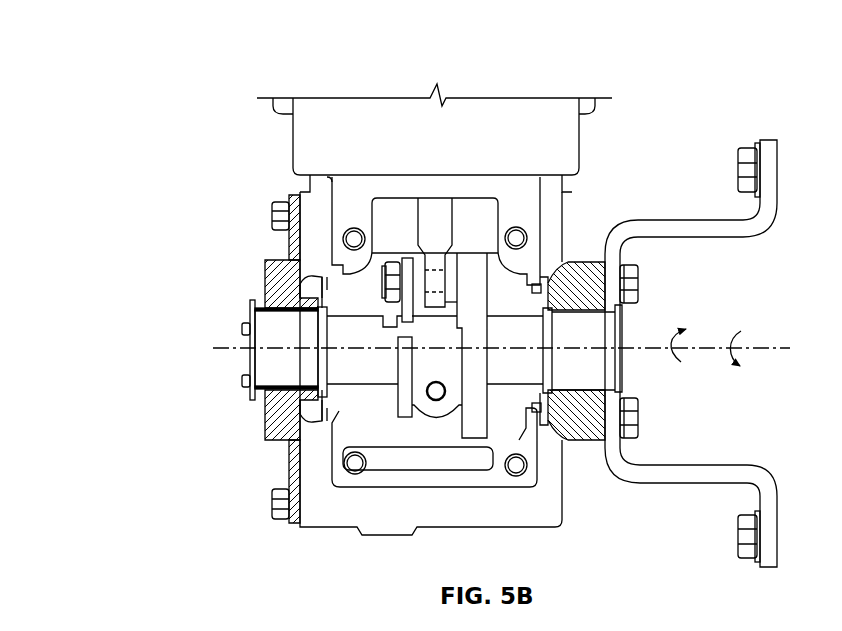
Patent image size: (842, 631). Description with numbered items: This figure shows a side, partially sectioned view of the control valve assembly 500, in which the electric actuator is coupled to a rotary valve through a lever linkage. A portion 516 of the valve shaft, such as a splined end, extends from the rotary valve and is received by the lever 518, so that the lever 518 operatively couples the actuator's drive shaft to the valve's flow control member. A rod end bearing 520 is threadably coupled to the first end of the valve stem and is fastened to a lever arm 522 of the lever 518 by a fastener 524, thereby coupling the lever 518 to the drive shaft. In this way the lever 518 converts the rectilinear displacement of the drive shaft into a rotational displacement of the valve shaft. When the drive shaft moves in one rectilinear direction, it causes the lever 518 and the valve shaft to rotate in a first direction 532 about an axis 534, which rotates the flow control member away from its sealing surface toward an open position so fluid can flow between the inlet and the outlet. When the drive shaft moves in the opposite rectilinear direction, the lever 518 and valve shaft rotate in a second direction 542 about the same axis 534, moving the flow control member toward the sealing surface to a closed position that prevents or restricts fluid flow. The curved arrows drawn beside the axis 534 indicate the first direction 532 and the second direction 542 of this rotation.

The control valve assembly 500 is at (288, 74).
The portion of the valve shaft 516 is at (838, 630).
The lever 518 is at (342, 337).
The rod end bearing 520 is at (417, 207).
The lever arm 522 is at (477, 287).
The fastener 524 is at (385, 290).
The first direction 532 is at (745, 357).
The axis 534 is at (778, 348).
The second direction 542 is at (681, 362).